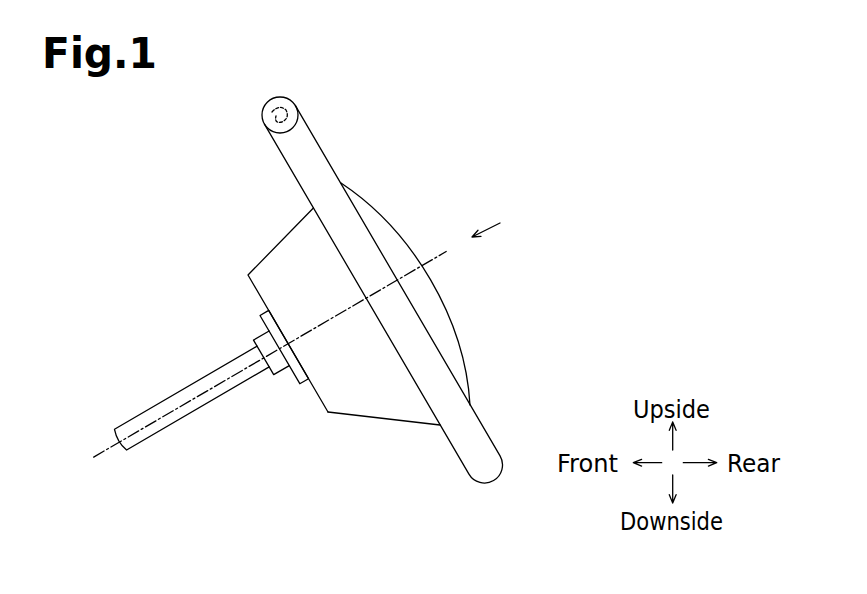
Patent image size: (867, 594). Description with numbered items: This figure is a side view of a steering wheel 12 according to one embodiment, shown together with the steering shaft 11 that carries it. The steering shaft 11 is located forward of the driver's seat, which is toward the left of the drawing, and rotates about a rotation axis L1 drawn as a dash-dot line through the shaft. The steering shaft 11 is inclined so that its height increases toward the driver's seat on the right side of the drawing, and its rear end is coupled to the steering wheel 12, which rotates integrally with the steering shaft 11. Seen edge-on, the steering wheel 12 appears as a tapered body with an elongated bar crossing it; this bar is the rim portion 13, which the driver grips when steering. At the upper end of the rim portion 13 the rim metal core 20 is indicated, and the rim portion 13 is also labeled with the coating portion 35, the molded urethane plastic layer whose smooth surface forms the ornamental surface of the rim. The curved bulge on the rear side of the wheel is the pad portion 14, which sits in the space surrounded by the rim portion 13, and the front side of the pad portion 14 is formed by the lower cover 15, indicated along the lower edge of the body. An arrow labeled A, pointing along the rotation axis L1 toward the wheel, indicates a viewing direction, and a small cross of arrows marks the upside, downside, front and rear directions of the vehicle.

The steering shaft 11 is at (148, 402).
The steering wheel 12 is at (361, 146).
The rim portion 13 is at (339, 294).
The coating portion 35 is at (283, 153).
The pad portion 14 is at (388, 219).
The lower cover 15 is at (352, 408).
The rim metal core 20 is at (278, 108).
The rotation axis L1 is at (99, 450).
The viewing direction A is at (497, 220).